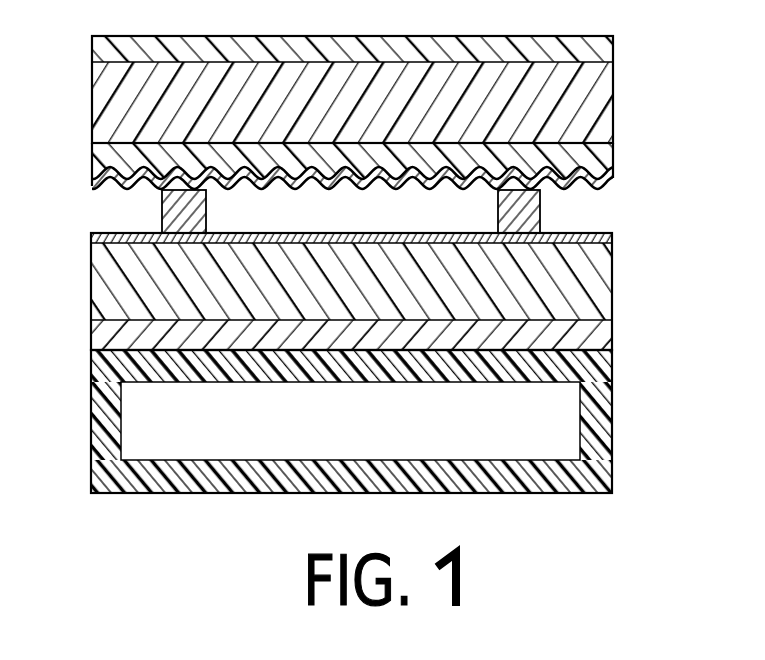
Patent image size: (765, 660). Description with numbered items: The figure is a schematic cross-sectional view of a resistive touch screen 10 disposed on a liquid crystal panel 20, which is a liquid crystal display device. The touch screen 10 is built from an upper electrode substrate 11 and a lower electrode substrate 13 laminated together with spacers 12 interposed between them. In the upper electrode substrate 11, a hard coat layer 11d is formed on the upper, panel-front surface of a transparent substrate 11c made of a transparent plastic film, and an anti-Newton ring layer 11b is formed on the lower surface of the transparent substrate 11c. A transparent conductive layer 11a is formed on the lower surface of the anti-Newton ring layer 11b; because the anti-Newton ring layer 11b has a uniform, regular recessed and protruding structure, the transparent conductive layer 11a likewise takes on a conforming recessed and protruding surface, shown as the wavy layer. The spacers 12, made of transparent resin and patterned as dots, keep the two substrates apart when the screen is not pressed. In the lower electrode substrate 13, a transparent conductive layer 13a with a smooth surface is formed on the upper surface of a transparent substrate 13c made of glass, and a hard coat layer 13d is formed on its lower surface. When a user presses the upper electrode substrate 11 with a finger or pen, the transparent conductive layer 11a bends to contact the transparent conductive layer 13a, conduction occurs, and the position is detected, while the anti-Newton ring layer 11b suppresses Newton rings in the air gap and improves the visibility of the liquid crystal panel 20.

The touch screen 10 is at (385, 206).
The upper electrode substrate 11 is at (409, 206).
The transparent conductive layer 11a is at (380, 272).
The anti-Newton ring layer 11b is at (602, 149).
The transparent substrate 11c is at (601, 101).
The hard coat layer 11d is at (601, 50).
The spacer 12 is at (518, 213).
The lower electrode substrate 13 is at (420, 293).
The transparent conductive layer 13a is at (602, 238).
The transparent substrate 13c is at (602, 281).
The hard coat layer 13d is at (390, 338).
The liquid crystal panel 20 is at (66, 353).